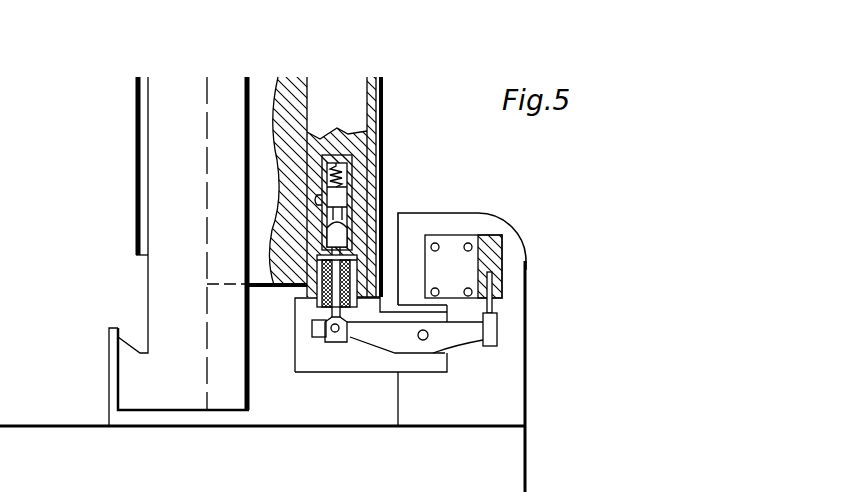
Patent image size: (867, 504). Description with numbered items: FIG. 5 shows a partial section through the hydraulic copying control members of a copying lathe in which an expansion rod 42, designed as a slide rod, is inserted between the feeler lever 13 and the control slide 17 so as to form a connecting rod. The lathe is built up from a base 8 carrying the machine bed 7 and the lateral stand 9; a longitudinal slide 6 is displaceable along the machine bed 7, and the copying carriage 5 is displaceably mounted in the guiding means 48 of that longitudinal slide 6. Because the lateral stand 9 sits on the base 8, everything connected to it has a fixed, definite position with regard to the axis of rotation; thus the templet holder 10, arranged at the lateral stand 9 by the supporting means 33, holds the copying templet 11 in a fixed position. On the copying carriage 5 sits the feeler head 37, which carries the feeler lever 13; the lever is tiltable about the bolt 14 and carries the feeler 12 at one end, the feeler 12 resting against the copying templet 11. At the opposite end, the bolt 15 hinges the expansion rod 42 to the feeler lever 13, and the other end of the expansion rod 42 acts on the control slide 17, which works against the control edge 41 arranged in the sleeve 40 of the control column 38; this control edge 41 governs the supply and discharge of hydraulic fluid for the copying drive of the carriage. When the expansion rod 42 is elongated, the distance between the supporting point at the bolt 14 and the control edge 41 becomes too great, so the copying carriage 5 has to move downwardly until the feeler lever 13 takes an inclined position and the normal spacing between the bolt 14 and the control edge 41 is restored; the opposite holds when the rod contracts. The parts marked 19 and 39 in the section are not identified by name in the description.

The copying carriage 5 is at (270, 160).
The longitudinal slide 6 is at (186, 160).
The machine bed 7 is at (84, 158).
The base 8 is at (251, 450).
The lateral stand 9 is at (434, 413).
The templet holder 10 is at (500, 243).
The copying templet 11 is at (493, 307).
The feeler 12 is at (492, 323).
The feeler lever 13 is at (450, 338).
The bolt 14 is at (450, 360).
The bolt 15 is at (327, 337).
The control slide 17 is at (352, 228).
The plunger rod 19 is at (316, 270).
The supporting means 33 is at (448, 253).
The feeler head 37 is at (303, 317).
The control column 38 is at (343, 143).
The spring 39 is at (352, 163).
The sleeve 40 is at (352, 181).
The control edge 41 is at (350, 198).
The expansion rod 42 is at (308, 285).
The guiding means 48 is at (208, 133).